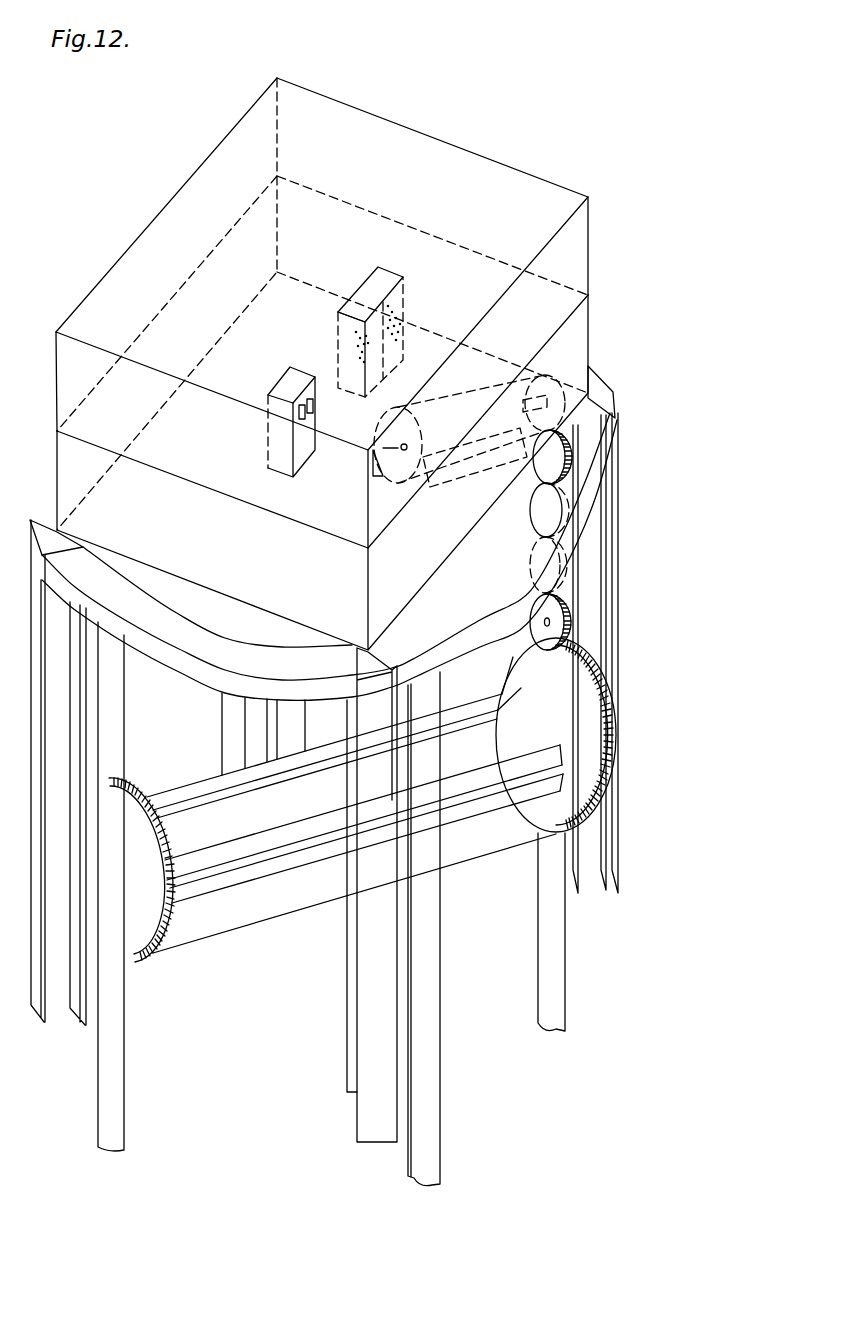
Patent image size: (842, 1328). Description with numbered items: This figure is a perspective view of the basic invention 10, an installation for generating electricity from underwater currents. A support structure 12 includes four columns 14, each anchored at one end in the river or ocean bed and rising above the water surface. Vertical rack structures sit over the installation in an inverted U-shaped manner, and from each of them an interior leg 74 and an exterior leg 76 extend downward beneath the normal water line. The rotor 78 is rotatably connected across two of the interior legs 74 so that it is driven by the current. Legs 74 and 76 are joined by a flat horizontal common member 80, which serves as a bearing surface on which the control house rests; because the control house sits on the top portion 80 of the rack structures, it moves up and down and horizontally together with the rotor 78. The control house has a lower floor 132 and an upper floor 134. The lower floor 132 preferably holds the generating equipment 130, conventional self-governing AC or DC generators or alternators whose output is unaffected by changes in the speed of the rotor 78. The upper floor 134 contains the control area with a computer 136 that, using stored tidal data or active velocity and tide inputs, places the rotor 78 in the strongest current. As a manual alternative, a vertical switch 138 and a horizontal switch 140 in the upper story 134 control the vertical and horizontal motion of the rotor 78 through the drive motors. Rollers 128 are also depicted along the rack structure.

The basic invention 10 is at (582, 170).
The support structure 12 is at (637, 683).
The columns 14 is at (230, 728).
The interior leg 74 is at (85, 1024).
The exterior leg 76 is at (44, 1025).
The rotor 78 is at (179, 779).
The flat horizontal common member 80 is at (600, 397).
The roller 128 is at (573, 617).
The generating equipment 130 is at (443, 432).
The lower floor 132 is at (589, 323).
The upper floor 134 is at (588, 282).
The computer 136 is at (405, 298).
The vertical switch 138 is at (305, 420).
The horizontal switch 140 is at (316, 408).